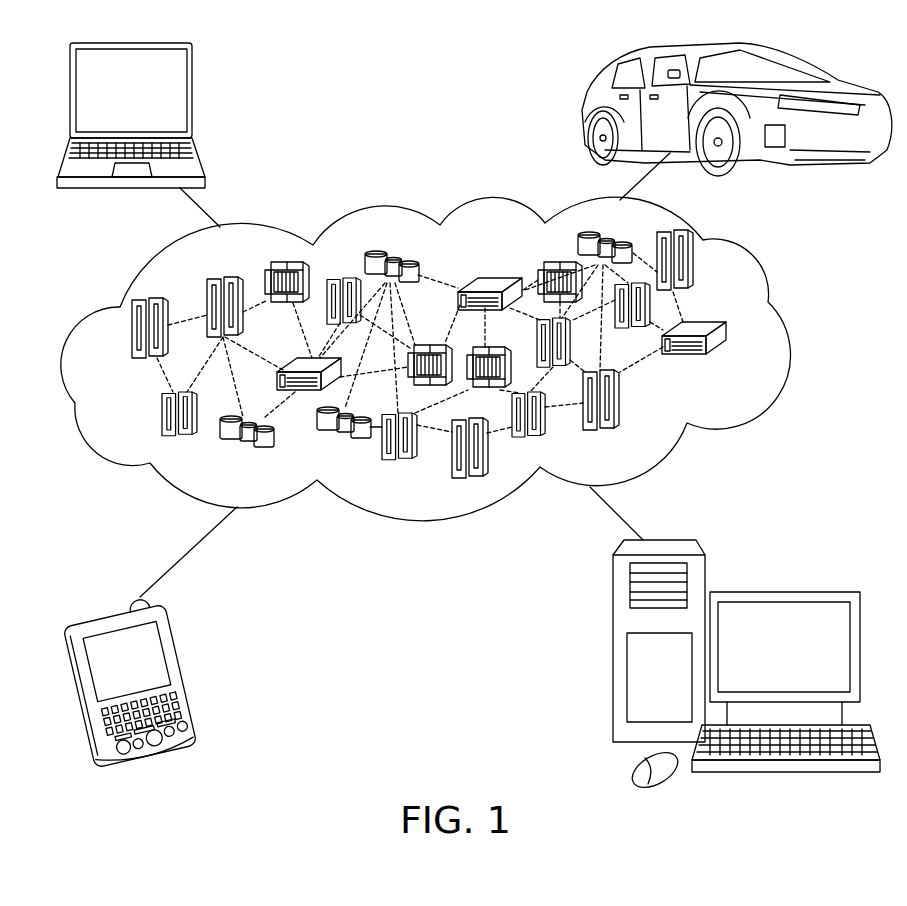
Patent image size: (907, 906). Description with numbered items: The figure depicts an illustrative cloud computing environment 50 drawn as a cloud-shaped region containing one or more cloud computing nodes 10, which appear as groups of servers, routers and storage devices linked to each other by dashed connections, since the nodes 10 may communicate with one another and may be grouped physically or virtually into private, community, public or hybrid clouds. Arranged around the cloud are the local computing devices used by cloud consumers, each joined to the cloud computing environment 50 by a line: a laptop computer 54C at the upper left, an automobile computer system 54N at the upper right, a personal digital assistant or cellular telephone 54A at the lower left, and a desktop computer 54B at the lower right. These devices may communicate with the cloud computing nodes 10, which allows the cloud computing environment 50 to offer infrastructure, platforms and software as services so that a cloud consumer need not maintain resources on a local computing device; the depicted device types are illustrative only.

The cloud computing nodes 10 is at (737, 366).
The cloud computing environment 50 is at (786, 335).
The personal digital assistant or cellular telephone 54A is at (184, 672).
The desktop computer 54B is at (782, 592).
The laptop computer 54C is at (194, 97).
The automobile computer system 54N is at (587, 108).